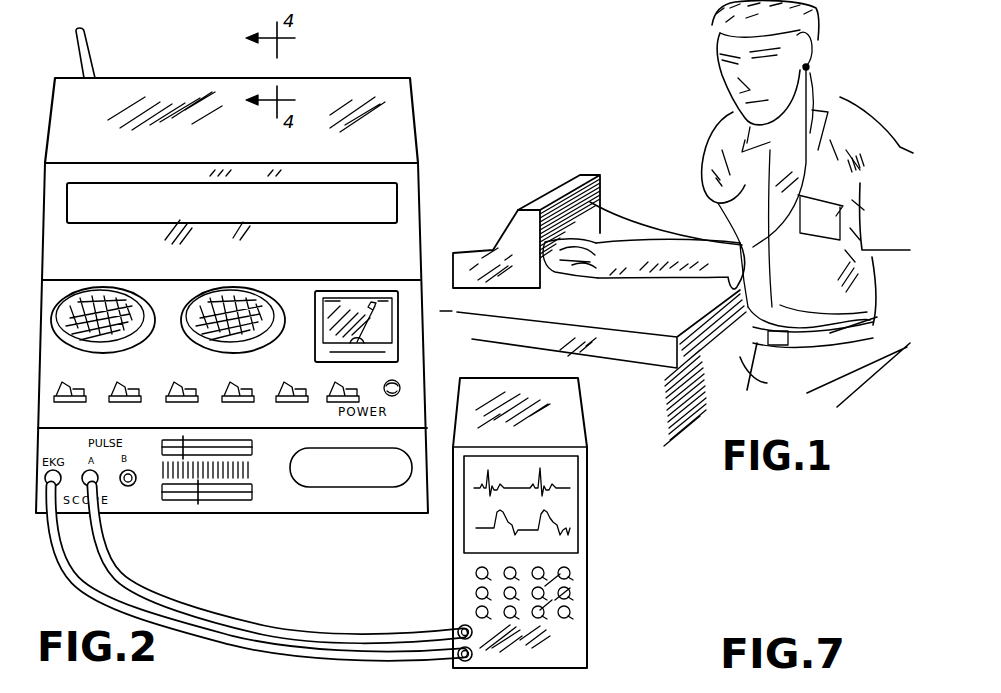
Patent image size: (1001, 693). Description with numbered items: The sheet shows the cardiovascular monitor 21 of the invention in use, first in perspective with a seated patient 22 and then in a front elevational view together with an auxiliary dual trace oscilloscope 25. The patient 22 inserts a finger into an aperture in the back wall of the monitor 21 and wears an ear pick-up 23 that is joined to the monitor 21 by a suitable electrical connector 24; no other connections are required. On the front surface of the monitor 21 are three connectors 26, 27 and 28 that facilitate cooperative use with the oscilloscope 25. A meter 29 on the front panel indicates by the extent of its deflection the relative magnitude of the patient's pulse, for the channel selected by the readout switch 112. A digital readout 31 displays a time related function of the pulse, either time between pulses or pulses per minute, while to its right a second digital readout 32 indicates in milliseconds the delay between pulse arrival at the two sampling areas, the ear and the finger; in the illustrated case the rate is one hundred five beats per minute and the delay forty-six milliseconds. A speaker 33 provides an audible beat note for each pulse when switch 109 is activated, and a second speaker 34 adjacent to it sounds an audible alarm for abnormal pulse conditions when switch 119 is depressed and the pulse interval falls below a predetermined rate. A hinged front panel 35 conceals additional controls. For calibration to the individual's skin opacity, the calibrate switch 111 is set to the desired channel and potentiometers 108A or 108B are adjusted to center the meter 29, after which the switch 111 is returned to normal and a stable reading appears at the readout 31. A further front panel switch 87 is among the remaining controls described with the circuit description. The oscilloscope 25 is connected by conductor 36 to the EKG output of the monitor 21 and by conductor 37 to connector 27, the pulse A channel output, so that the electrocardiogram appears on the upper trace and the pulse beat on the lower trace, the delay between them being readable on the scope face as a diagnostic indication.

In FIG. 2, the cardiovascular monitor 21 is at (366, 532).
In FIG. 1, the cardiovascular monitor 21 is at (582, 158).
In FIG. 1, the patient 22 is at (680, 60).
In FIG. 1, the ear pick-up 23 is at (811, 66).
In FIG. 2, the electrical connector 24 is at (92, 52).
In FIG. 1, the electrical connector 24 is at (633, 227).
In FIG. 2, the dual trace oscilloscope 25 is at (606, 584).
In FIG. 2, the connector 26 is at (47, 484).
In FIG. 2, the connector 27 is at (94, 482).
In FIG. 2, the connector 28 is at (135, 485).
In FIG. 2, the meter 29 is at (316, 306).
In FIG. 2, the digital readout 31 is at (107, 218).
In FIG. 2, the second digital readout 32 is at (350, 218).
In FIG. 2, the speaker 33 is at (146, 311).
In FIG. 2, the second speaker 34 is at (240, 296).
In FIG. 2, the hinged front panel 35 is at (364, 478).
In FIG. 2, the conductor 36 is at (80, 566).
In FIG. 2, the conductor 37 is at (143, 566).
In FIG. 2, the peak switch 87 is at (68, 390).
In FIG. 2, the switch 109 is at (130, 390).
In FIG. 2, the calibrate switch 111 is at (181, 389).
In FIG. 2, the switch 119 is at (239, 390).
In FIG. 2, the readout switch 112 is at (292, 389).
In FIG. 2, the potentiometer 108A is at (252, 450).
In FIG. 2, the potentiometer 108B is at (252, 487).